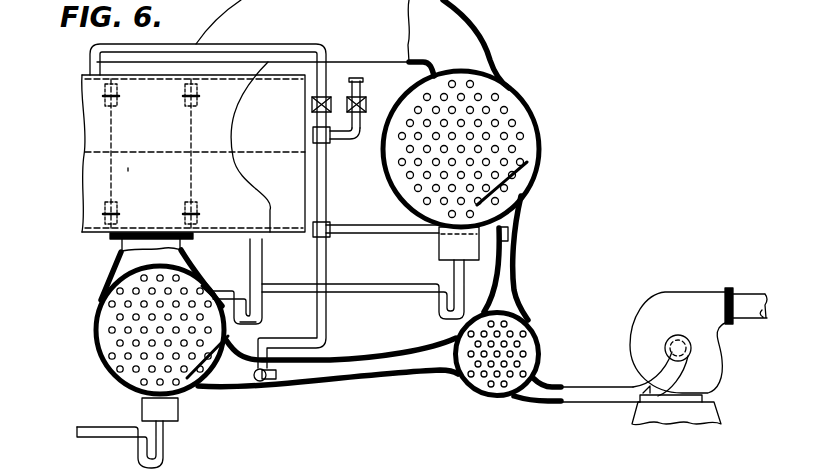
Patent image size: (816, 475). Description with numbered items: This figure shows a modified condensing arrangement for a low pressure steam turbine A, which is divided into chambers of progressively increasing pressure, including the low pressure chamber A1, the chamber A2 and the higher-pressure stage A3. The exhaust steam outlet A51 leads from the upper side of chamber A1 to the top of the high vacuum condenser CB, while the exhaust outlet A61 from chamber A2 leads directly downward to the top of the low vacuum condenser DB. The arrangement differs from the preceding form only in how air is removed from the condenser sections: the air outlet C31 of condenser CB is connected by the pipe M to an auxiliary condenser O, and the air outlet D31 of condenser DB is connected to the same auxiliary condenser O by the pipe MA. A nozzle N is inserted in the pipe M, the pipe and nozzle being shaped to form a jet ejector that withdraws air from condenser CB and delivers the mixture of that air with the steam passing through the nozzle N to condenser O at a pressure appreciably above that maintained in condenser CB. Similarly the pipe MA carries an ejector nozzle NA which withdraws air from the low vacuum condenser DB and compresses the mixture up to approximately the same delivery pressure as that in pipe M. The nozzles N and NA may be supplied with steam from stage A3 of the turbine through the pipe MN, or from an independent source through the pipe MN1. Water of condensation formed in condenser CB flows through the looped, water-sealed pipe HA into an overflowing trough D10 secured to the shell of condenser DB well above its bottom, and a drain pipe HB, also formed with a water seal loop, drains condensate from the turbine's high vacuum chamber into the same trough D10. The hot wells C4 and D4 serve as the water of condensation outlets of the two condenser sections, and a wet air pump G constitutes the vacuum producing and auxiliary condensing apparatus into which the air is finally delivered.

The low pressure steam turbine A is at (82, 97).
The low pressure chamber A1 is at (255, 100).
The turbine chamber A2 is at (128, 171).
The turbine stage chamber A3 is at (88, 119).
The exhaust steam outlet A51 is at (468, 33).
The exhaust outlet A61 is at (119, 253).
The steam supply pipe MN is at (90, 50).
The independent steam supply pipe MN1 is at (364, 82).
The high vacuum condenser CB is at (541, 121).
The air outlet C31 is at (492, 214).
The hot well C4 is at (440, 254).
The ejector nozzle N is at (508, 231).
The air pipe M is at (518, 261).
The auxiliary condenser O is at (526, 318).
The condensate pipe HA is at (349, 284).
The drain pipe HB is at (262, 304).
The ejector nozzle NA is at (278, 356).
The air pipe MA is at (364, 357).
The low vacuum condenser DB is at (94, 320).
The overflowing trough D10 is at (204, 285).
The hot well D4 is at (142, 405).
The air outlet D31 is at (218, 380).
The wet air pump G is at (664, 356).